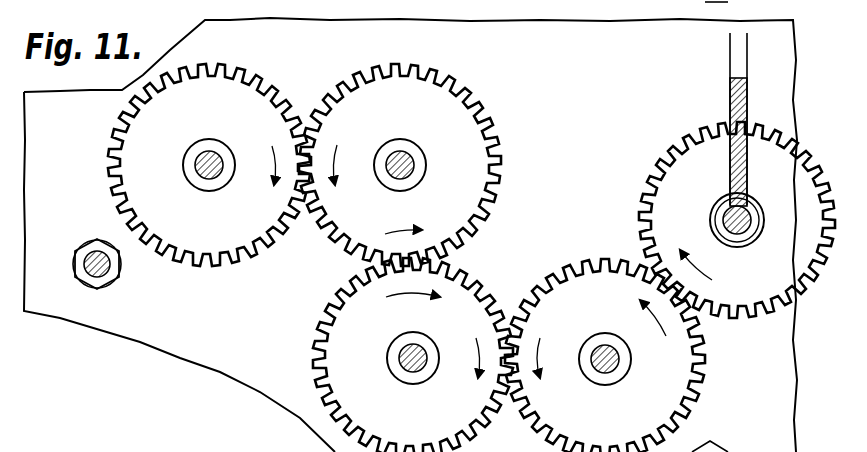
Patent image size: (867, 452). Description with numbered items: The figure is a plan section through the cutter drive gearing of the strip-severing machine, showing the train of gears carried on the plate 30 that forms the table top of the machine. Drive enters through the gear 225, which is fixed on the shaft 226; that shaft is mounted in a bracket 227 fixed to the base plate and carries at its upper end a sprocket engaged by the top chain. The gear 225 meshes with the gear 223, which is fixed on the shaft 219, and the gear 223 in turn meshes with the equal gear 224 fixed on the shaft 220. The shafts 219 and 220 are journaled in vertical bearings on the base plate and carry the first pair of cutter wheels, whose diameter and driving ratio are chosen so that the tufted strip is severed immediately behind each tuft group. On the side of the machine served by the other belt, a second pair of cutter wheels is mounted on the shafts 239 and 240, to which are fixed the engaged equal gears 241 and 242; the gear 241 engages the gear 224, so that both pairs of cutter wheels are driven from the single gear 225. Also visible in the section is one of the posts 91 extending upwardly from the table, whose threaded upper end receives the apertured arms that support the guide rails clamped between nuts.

The plate 30 is at (206, 343).
The gear 242 is at (137, 140).
The shaft 240 is at (218, 155).
The gear 241 is at (478, 152).
The shaft 239 is at (405, 155).
The gear 225 is at (692, 164).
The shaft 226 is at (716, 243).
The bracket 227 is at (748, 94).
The gear 224 is at (447, 288).
The shaft 220 is at (408, 352).
The gear 223 is at (585, 288).
The shaft 219 is at (615, 359).
The post 91 is at (108, 274).